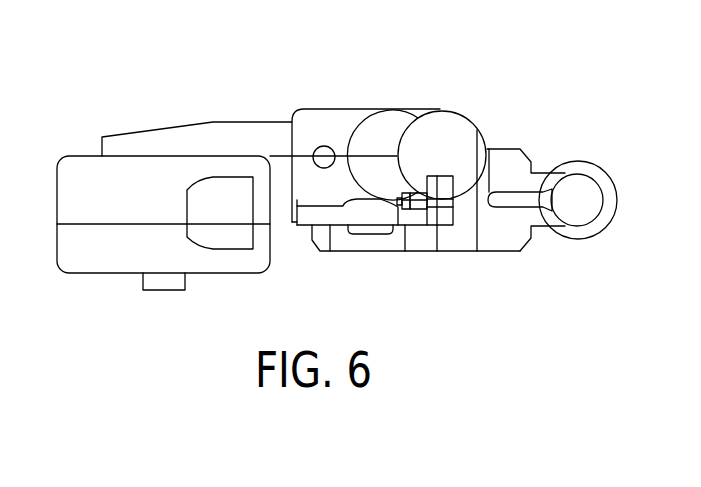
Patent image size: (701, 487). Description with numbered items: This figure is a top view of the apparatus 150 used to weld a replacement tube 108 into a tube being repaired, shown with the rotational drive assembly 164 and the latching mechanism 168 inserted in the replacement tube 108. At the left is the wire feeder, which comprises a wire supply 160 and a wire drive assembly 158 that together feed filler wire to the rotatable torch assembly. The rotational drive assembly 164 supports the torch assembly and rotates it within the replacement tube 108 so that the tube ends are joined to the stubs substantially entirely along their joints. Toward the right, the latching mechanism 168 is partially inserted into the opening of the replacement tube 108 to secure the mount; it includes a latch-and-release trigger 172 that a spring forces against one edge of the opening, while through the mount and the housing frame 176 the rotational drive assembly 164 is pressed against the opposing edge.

The apparatus 150 is at (163, 67).
The wire supply 160 is at (88, 172).
The wire drive assembly 158 is at (453, 133).
The rotational drive assembly 164 is at (398, 269).
The latching mechanism 168 is at (540, 153).
The latch-and-release trigger 172 is at (490, 208).
The housing frame 176 is at (513, 254).
The replacement tube 108 is at (575, 163).